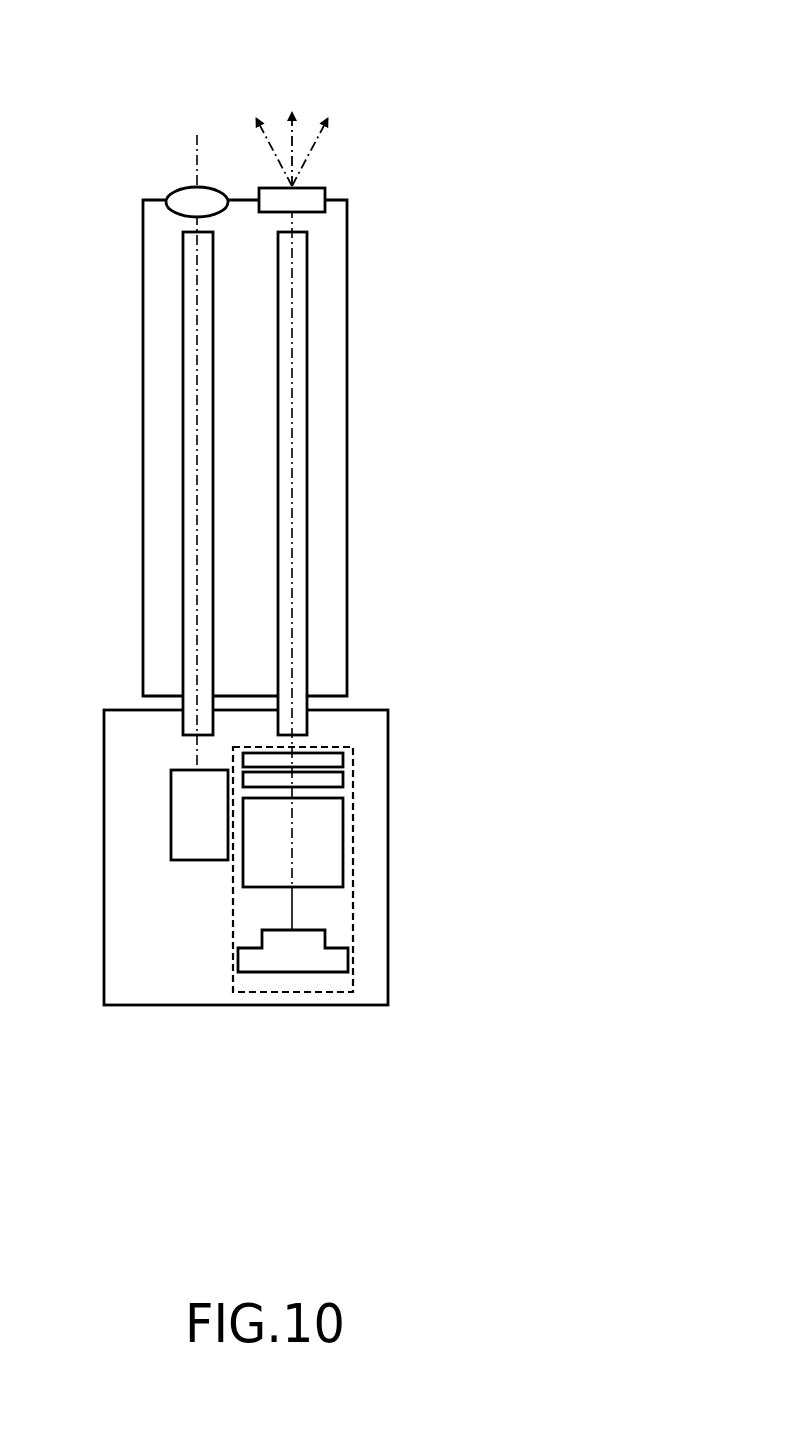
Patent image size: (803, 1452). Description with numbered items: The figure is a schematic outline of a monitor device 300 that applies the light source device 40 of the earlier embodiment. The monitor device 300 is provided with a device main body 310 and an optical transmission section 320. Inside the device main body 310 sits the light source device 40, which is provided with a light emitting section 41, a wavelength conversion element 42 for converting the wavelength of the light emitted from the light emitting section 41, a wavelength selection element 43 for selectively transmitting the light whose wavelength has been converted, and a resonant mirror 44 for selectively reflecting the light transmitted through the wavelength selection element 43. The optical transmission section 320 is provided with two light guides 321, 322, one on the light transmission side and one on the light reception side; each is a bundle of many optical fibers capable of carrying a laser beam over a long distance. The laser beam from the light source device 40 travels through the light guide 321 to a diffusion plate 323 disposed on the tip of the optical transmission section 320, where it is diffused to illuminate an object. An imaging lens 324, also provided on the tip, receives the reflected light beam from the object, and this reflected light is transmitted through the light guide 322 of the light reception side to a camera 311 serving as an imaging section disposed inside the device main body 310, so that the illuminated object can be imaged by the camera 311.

The monitor device 300 is at (470, 43).
The device main body 310 is at (388, 855).
The camera 311 is at (168, 840).
The optical transmission section 320 is at (347, 390).
The light guide 321 is at (308, 470).
The light guide 322 is at (183, 478).
The diffusion plate 323 is at (326, 196).
The imaging lens 324 is at (170, 192).
The light source device 40 is at (357, 765).
The light emitting section 41 is at (335, 958).
The wavelength conversion element 42 is at (343, 818).
The wavelength selection element 43 is at (343, 780).
The resonant mirror 44 is at (328, 750).